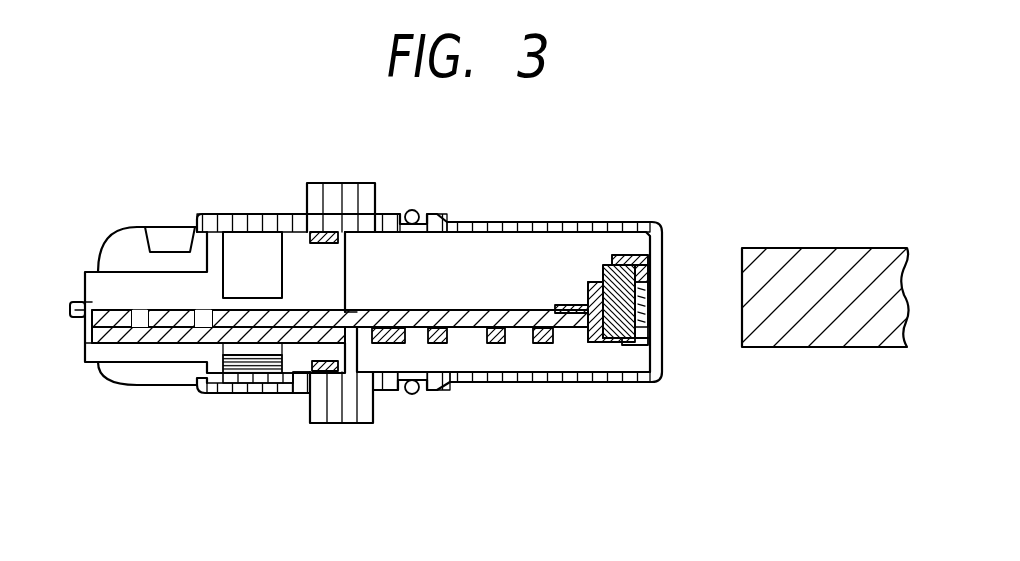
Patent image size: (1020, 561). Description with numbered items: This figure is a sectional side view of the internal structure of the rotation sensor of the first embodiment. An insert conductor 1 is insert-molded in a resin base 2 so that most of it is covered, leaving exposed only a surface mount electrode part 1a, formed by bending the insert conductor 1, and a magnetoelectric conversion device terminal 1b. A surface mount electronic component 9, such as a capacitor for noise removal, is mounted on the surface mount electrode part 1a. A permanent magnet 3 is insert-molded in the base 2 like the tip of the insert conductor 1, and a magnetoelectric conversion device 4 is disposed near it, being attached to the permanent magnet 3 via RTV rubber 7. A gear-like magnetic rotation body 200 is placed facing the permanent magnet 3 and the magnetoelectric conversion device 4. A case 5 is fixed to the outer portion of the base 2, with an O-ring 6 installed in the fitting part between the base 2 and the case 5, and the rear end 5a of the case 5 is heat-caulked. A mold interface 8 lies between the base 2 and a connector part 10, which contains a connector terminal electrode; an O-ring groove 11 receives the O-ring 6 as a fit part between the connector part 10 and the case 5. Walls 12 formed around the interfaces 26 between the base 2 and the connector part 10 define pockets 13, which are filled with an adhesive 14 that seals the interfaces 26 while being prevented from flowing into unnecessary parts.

The insert conductor 1 is at (357, 333).
The surface mount electrode part 1a is at (448, 333).
The magnetoelectric conversion device terminal 1b is at (604, 342).
The base 2 is at (480, 310).
The permanent magnet 3 is at (618, 255).
The magnetoelectric conversion device 4 is at (652, 313).
The case 5 is at (472, 222).
The rear end 5a is at (202, 214).
The O-ring 6 is at (333, 232).
The RTV rubber 7 is at (652, 293).
The mold interface 8 is at (345, 303).
The surface mount electronic component 9 is at (398, 393).
The connector part 10 is at (103, 377).
The O-ring groove 11 is at (298, 214).
The walls 12 is at (207, 397).
The pockets 13 is at (253, 377).
The adhesive 14 is at (275, 375).
The interfaces 26 is at (240, 357).
The gear-like magnetic rotation body 200 is at (792, 255).